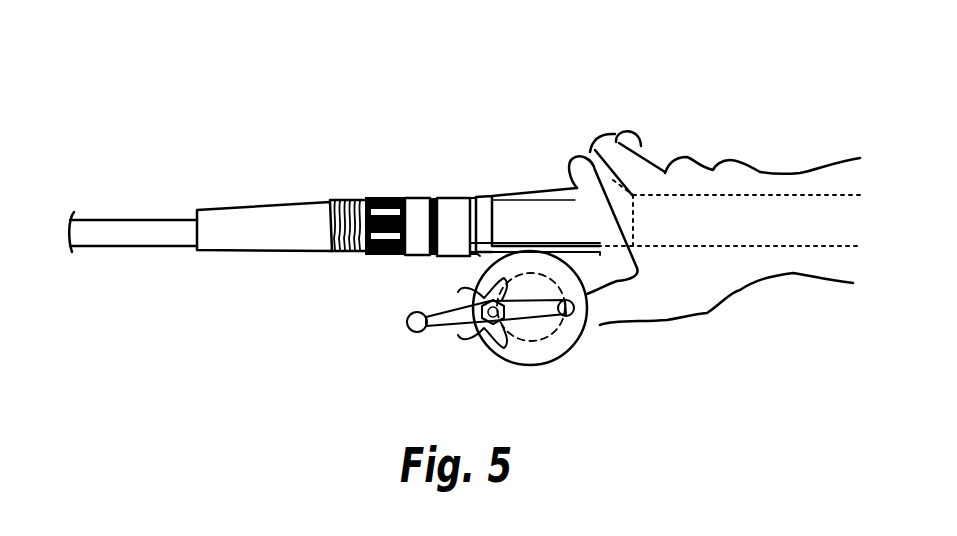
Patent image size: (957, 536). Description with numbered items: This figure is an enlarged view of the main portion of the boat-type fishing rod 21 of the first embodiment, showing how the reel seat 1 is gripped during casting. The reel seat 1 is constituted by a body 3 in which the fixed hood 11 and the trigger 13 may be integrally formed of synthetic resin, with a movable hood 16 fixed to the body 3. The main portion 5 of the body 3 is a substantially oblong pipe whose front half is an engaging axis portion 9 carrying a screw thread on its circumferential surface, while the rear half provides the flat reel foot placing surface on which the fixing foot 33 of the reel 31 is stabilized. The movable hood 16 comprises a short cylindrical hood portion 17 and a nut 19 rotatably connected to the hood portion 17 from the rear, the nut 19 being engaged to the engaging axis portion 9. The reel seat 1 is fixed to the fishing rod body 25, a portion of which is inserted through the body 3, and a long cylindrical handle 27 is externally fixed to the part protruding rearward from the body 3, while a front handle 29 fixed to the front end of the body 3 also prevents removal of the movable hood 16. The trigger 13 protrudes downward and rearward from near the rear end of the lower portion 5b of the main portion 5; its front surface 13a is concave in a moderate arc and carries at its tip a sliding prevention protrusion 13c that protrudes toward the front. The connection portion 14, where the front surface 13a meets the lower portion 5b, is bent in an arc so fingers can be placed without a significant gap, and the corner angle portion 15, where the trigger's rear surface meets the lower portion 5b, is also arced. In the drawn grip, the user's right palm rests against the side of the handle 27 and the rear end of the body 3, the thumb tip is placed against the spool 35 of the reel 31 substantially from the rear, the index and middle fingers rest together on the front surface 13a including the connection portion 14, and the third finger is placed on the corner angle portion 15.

The reel seat 1 is at (382, 268).
The body 3 is at (525, 175).
The main portion 5 is at (502, 193).
The lower portion 5b is at (538, 192).
The engaging axis portion 9 is at (345, 198).
The fixed hood 11 is at (600, 255).
The trigger 13 is at (603, 127).
The front surface 13a is at (603, 153).
The sliding prevention protrusion 13c is at (625, 135).
The connection portion 14 is at (577, 157).
The corner angle portion 15 is at (640, 197).
The movable hood 16 is at (352, 73).
The hood portion 17 is at (442, 195).
The nut 19 is at (413, 195).
The fishing rod 21 is at (226, 291).
The fishing rod body 25 is at (125, 235).
The handle 27 is at (750, 210).
The front handle 29 is at (220, 227).
The reel 31 is at (518, 323).
The fixing foot 33 is at (490, 257).
The spool 35 is at (562, 348).